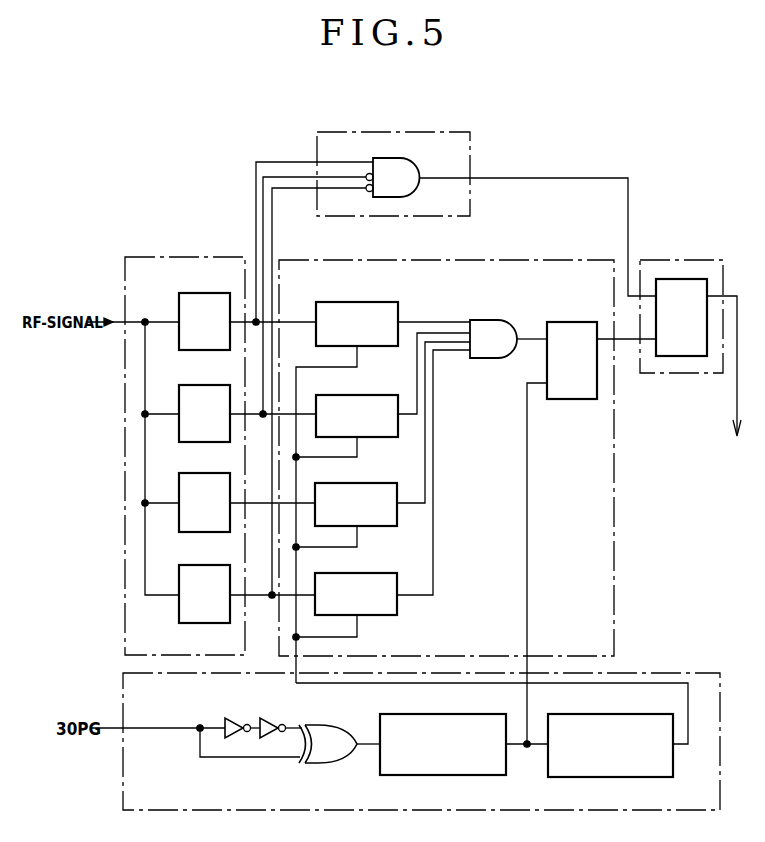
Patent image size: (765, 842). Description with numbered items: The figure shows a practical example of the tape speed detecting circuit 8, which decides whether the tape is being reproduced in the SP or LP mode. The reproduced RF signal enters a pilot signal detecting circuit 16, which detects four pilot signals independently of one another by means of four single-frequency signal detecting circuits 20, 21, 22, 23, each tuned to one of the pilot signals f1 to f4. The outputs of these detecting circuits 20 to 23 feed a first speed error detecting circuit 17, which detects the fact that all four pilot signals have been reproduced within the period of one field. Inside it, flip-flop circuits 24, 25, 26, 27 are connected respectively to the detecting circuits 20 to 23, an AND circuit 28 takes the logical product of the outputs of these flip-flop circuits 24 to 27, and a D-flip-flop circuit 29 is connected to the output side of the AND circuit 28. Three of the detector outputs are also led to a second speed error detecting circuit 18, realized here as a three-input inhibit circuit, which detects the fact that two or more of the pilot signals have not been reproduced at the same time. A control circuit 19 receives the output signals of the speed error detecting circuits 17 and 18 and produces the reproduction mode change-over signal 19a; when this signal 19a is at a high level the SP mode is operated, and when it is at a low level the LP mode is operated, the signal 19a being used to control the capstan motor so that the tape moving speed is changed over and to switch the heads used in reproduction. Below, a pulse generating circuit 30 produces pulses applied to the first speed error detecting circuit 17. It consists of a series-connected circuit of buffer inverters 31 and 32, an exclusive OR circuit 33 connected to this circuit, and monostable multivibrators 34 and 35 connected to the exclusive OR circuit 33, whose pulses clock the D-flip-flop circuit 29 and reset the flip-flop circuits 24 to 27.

The tape speed detecting circuit 8 is at (556, 140).
The pilot signal detecting circuit 16 is at (216, 257).
The first speed error detecting circuit 17 is at (568, 260).
The second speed error detecting circuit 18 is at (434, 132).
The control circuit 19 is at (690, 260).
The reproduction mode change-over signal 19a is at (737, 405).
The single-frequency signal detecting circuit 20 is at (192, 293).
The single-frequency signal detecting circuit 21 is at (192, 385).
The single-frequency signal detecting circuit 22 is at (192, 473).
The single-frequency signal detecting circuit 23 is at (192, 565).
The flip-flop circuit 24 is at (372, 302).
The flip-flop circuit 25 is at (372, 395).
The flip-flop circuit 26 is at (372, 483).
The flip-flop circuit 27 is at (372, 573).
The AND circuit 28 is at (488, 320).
The D-flip-flop circuit 29 is at (578, 322).
The pulse generating circuit 30 is at (676, 673).
The buffer inverter 31 is at (236, 720).
The buffer inverter 32 is at (270, 720).
The exclusive OR circuit 33 is at (338, 724).
The monostable multivibrator 34 is at (470, 714).
The monostable multivibrator 35 is at (633, 714).